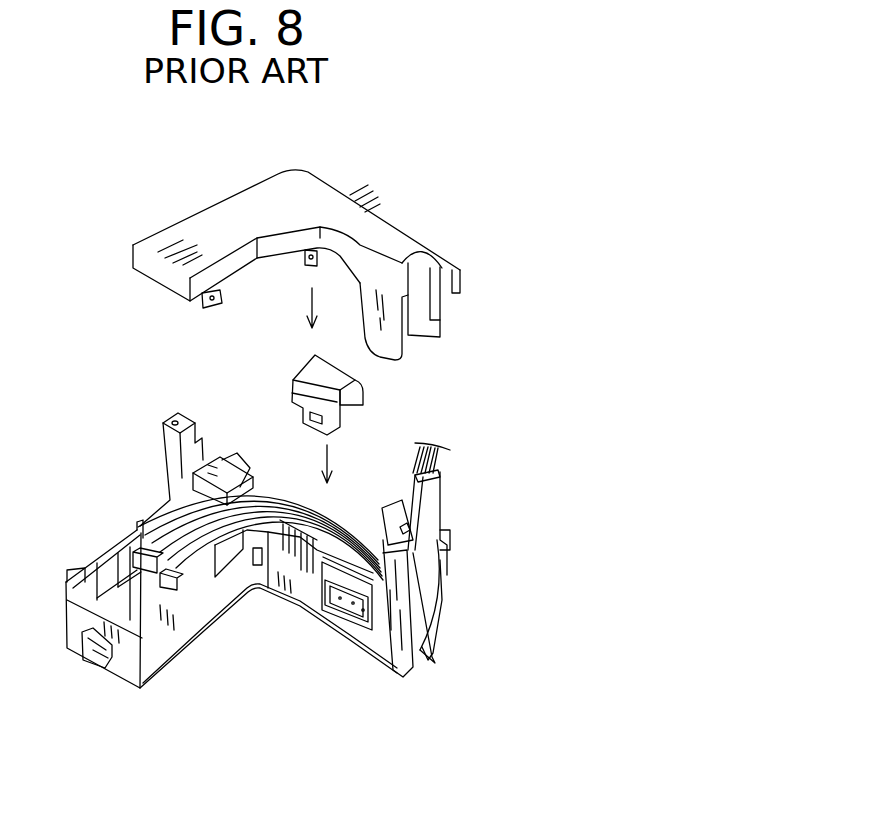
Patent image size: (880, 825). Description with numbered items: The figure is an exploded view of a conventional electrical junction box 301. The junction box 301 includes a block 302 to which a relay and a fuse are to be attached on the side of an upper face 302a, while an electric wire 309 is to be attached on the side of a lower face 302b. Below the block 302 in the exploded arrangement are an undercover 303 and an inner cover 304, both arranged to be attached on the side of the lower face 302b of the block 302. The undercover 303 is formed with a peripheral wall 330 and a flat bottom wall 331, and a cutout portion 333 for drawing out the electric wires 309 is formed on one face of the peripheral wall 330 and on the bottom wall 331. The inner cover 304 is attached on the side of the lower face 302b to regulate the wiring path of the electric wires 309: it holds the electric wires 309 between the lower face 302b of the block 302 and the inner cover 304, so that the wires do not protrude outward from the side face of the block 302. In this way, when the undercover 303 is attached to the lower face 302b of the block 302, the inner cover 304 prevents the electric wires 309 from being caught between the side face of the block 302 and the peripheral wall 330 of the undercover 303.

The electrical junction box 301 is at (526, 153).
The block 302 is at (125, 668).
The upper face 302a is at (215, 638).
The lower face 302b is at (268, 492).
The undercover 303 is at (388, 220).
The inner cover 304 is at (363, 393).
The electric wire 309 is at (330, 528).
The peripheral wall 330 is at (265, 248).
The bottom wall 331 is at (308, 192).
The cutout portion 333 is at (427, 327).